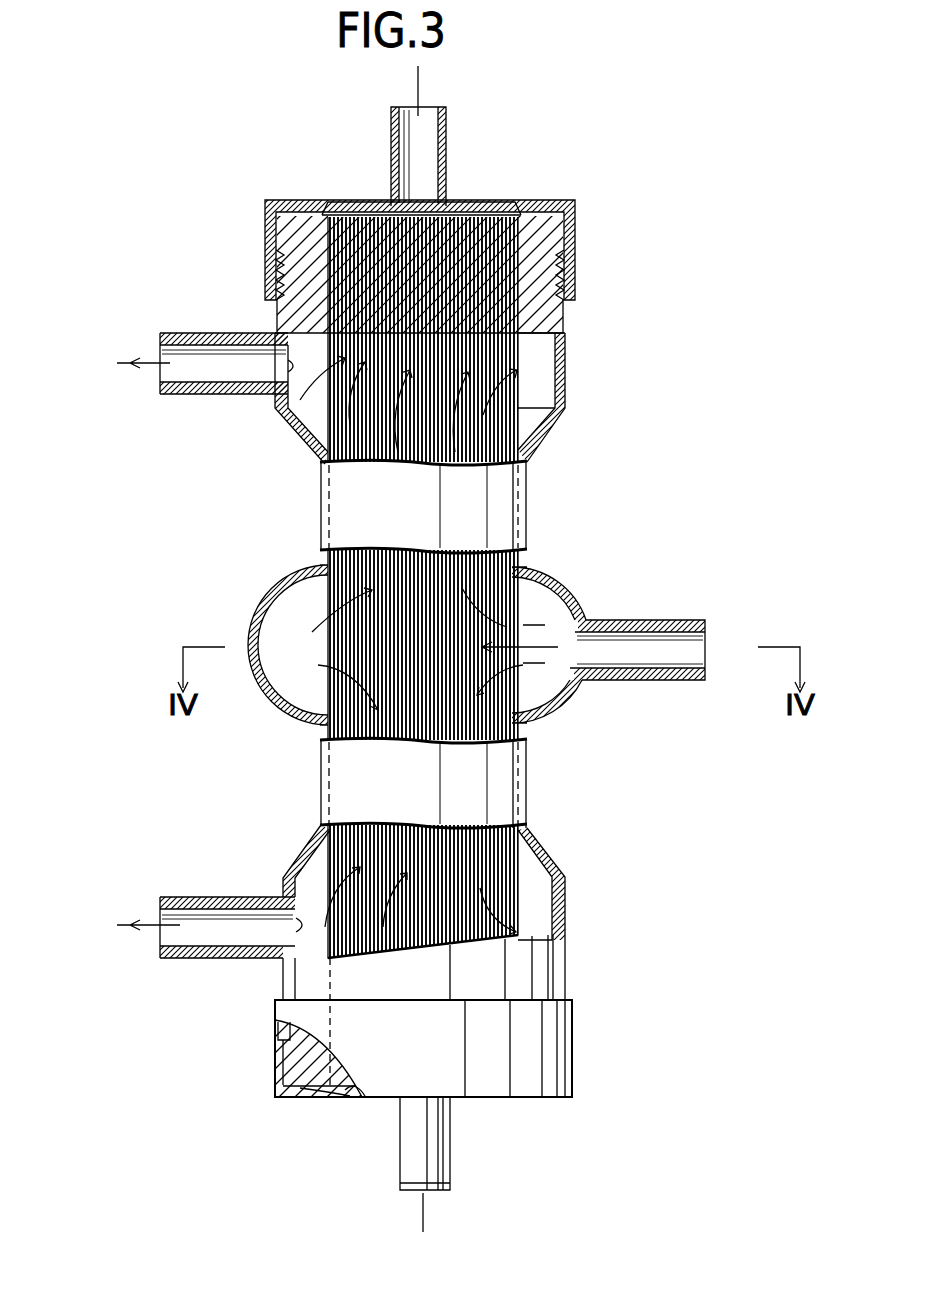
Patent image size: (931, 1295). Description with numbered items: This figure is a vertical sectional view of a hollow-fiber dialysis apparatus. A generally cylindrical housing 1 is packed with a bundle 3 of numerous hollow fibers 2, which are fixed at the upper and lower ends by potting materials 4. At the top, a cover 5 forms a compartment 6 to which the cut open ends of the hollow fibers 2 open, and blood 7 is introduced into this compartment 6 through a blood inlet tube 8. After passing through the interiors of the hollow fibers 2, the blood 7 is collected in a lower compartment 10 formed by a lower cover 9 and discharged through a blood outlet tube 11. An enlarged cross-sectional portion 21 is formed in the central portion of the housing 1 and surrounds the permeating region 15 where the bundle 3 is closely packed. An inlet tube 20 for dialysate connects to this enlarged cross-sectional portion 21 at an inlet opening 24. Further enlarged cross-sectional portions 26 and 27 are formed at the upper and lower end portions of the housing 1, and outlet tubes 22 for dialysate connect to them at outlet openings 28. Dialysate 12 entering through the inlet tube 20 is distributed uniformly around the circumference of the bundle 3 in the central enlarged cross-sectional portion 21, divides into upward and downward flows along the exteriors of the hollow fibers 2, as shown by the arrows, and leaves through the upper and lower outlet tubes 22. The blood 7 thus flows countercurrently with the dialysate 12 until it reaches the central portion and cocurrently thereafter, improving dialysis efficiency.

The housing 1 is at (536, 501).
The hollow fibers 2 is at (490, 448).
The bundle 3 is at (531, 402).
The potting materials 4 is at (565, 238).
The cover 5 is at (340, 208).
The compartment 6 is at (372, 208).
The blood 7 is at (418, 84).
The blood inlet tube 8 is at (446, 132).
The lower cover 9 is at (346, 1097).
The lower compartment 10 is at (352, 1097).
The blood outlet tube 11 is at (432, 1128).
The dialysate 12 is at (145, 365).
The permeating region 15 is at (500, 560).
The inlet tube for dialysate 20 is at (642, 622).
The enlarged cross-sectional portion 21 is at (268, 668).
The outlet tubes for dialysate 22 is at (192, 395).
The inlet opening 24 is at (588, 676).
The upper enlarged cross-sectional portion 26 is at (565, 362).
The lower enlarged cross-sectional portion 27 is at (565, 903).
The outlet openings 28 is at (280, 395).